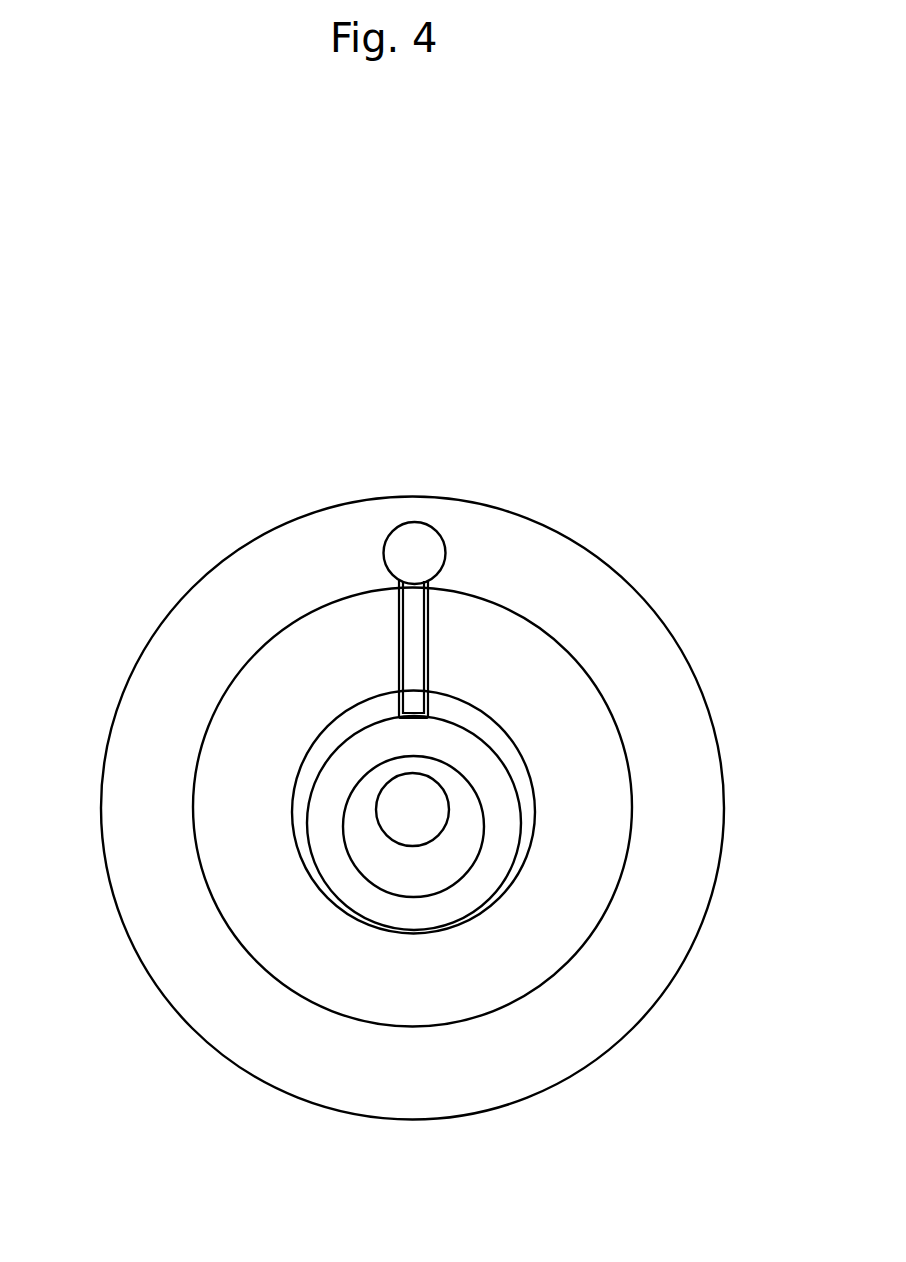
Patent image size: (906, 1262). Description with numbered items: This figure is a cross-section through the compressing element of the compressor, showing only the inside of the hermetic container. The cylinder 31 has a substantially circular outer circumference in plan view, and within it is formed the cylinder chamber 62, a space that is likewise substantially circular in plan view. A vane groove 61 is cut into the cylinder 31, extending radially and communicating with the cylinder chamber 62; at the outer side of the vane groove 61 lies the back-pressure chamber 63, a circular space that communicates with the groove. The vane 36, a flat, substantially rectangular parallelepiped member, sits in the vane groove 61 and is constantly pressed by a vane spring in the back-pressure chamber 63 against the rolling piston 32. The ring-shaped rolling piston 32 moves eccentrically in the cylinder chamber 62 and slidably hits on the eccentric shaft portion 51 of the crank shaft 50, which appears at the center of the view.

The cylinder 31 is at (613, 752).
The rolling piston 32 is at (490, 873).
The vane 36 is at (408, 613).
The crank shaft 50 is at (400, 830).
The eccentric shaft portion 51 is at (392, 877).
The vane groove 61 is at (424, 658).
The cylinder chamber 62 is at (490, 730).
The back-pressure chamber 63 is at (435, 550).